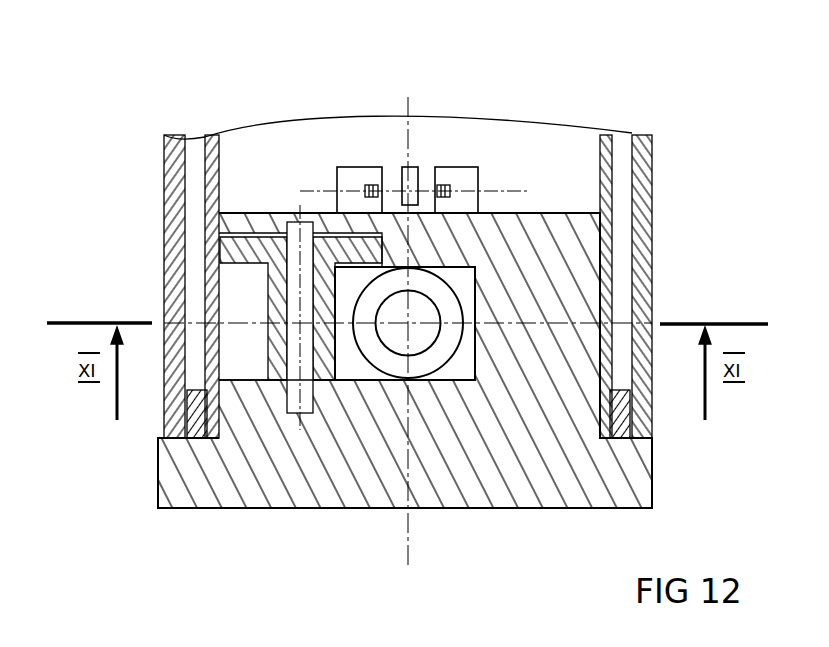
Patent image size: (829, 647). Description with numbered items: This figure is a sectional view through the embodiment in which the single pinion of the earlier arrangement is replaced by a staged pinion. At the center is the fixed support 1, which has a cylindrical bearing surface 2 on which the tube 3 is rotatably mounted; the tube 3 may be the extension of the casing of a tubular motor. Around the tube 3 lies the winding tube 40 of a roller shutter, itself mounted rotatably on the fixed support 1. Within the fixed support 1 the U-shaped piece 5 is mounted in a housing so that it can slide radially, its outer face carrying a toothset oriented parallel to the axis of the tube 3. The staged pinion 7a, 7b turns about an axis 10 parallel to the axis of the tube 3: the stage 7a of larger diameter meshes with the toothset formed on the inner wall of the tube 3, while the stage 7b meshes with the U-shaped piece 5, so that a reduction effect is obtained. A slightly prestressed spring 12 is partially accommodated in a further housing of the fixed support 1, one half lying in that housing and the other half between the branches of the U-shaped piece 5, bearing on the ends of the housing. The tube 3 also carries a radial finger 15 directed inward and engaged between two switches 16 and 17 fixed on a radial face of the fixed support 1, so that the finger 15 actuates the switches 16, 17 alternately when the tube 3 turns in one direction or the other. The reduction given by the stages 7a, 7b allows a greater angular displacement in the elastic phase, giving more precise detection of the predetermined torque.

The fixed support 1 is at (568, 452).
The cylindrical bearing surface 2 is at (590, 292).
The tube 3 is at (607, 195).
The U-shaped piece 5 is at (350, 380).
The stage of larger diameter of staged pinion 7a is at (265, 247).
The stage of staged pinion 7b is at (278, 322).
The axis of the pinion 10 is at (205, 400).
The spring 12 is at (430, 362).
The radial finger 15 is at (407, 177).
The switch 16 is at (358, 178).
The switch 17 is at (462, 177).
The winding tube 40 is at (625, 393).